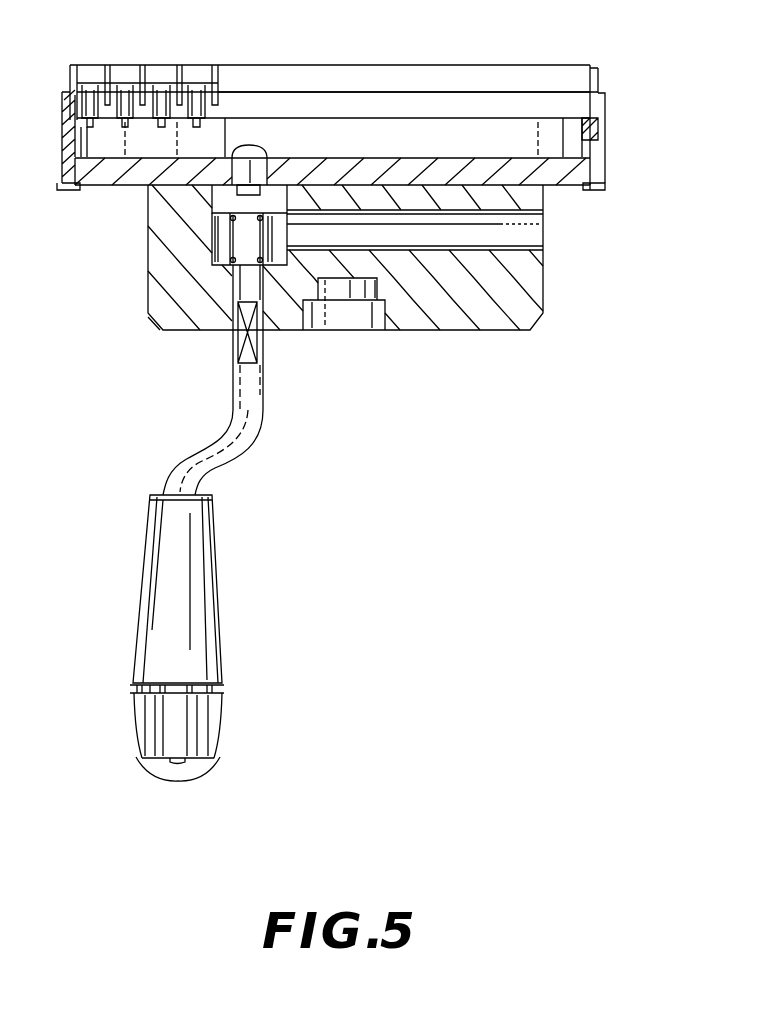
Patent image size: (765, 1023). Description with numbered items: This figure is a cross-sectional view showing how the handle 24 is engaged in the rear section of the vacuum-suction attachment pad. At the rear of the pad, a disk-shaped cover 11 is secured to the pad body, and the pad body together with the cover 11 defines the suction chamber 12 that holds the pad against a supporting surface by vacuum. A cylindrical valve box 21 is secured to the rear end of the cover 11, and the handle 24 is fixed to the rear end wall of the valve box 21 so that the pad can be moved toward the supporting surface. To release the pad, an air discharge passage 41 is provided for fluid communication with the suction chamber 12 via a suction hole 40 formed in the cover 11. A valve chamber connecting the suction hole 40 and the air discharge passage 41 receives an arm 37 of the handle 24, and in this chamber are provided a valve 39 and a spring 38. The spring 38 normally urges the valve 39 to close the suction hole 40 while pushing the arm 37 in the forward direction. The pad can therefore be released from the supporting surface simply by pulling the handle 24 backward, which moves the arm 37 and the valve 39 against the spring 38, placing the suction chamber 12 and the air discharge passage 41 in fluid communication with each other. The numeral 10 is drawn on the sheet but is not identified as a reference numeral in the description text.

The housing 10 is at (605, 107).
The cover 11 is at (372, 158).
The suction chamber 12 is at (603, 147).
The valve box 21 is at (540, 327).
The handle 24 is at (217, 633).
The arm 37 is at (263, 375).
The spring 38 is at (225, 232).
The valve 39 is at (212, 192).
The suction hole 40 is at (273, 157).
The air discharge passage 41 is at (533, 229).